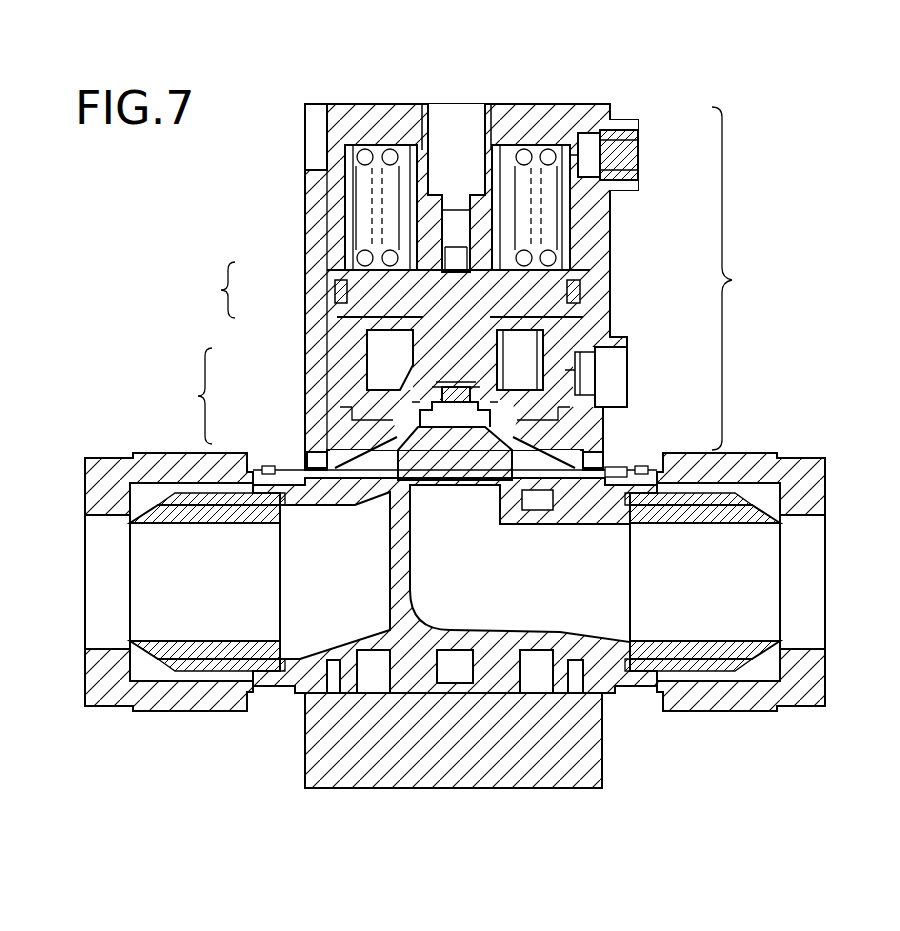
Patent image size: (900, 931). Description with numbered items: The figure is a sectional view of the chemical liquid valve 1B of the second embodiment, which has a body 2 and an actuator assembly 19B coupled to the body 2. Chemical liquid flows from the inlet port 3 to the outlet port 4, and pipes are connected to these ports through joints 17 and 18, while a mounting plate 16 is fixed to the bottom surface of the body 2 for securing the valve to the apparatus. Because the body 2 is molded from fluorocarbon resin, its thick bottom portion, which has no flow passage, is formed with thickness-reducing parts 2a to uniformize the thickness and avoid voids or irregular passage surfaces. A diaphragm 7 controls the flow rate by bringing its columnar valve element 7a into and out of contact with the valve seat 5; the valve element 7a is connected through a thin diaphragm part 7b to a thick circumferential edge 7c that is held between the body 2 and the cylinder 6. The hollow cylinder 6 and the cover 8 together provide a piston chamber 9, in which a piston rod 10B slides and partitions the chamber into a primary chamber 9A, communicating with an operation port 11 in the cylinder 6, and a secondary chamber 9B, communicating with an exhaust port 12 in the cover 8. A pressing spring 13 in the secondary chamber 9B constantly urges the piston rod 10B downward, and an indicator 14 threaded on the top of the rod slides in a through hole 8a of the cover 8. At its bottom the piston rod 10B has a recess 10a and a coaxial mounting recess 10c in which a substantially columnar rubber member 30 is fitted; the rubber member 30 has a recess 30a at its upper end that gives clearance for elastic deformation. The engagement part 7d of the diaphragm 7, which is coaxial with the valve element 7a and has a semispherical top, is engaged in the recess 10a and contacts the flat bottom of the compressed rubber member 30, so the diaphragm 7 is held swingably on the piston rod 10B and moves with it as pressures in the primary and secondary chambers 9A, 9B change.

The chemical liquid valve 1B is at (649, 90).
The body 2 is at (622, 675).
The thickness-reducing parts 2a is at (455, 688).
The inlet port 3 is at (758, 539).
The outlet port 4 is at (140, 540).
The valve seat 5 is at (512, 478).
The cylinder 6 is at (315, 232).
The diaphragm 7 is at (191, 396).
The valve element 7a is at (400, 432).
The thin diaphragm part 7b is at (345, 430).
The circumferential edge 7c is at (318, 462).
The engagement part 7d is at (425, 400).
The cover 8 is at (550, 112).
The through hole 8a is at (486, 120).
The piston chamber 9 is at (219, 290).
The primary chamber 9A is at (333, 313).
The secondary chamber 9B is at (333, 258).
The piston rod 10B is at (580, 290).
The recess 10a is at (540, 428).
The mounting recess 10c is at (592, 382).
The operation port 11 is at (618, 360).
The exhaust port 12 is at (640, 152).
The pressing spring 13 is at (392, 150).
The indicator 14 is at (462, 115).
The mounting plate 16 is at (437, 775).
The joint 17 is at (730, 698).
The joint 18 is at (190, 703).
The actuator assembly 19B is at (747, 278).
The rubber member 30 is at (472, 395).
The recess 30a is at (440, 385).